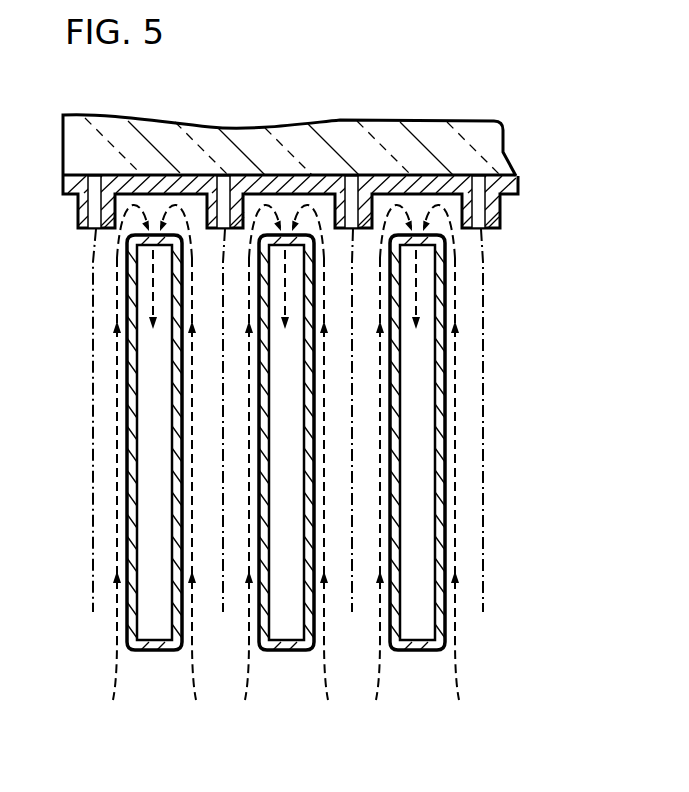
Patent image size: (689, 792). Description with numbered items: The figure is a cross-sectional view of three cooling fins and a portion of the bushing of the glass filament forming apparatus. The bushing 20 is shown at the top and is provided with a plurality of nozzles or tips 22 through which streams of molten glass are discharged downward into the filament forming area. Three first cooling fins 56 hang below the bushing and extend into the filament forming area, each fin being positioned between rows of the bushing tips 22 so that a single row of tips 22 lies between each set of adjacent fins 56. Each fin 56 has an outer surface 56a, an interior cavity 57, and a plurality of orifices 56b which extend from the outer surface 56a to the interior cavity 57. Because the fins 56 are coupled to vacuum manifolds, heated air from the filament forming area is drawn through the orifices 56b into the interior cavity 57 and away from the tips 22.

The bushing 20 is at (297, 178).
The nozzles or tips 22 is at (396, 182).
The first cooling fins 56 is at (145, 640).
The outer surface 56a is at (178, 618).
The orifices 56b is at (150, 243).
The interior cavity 57 is at (138, 492).